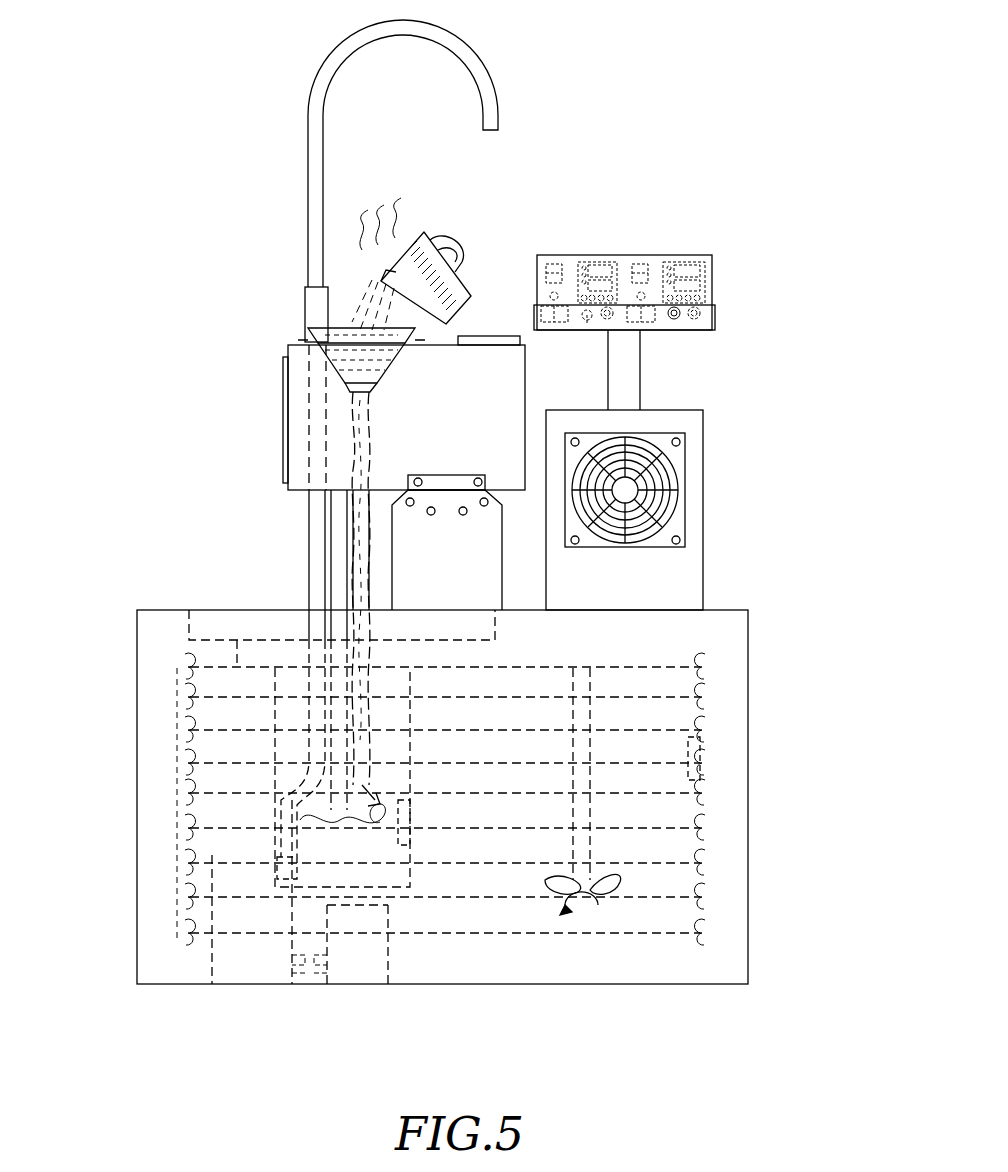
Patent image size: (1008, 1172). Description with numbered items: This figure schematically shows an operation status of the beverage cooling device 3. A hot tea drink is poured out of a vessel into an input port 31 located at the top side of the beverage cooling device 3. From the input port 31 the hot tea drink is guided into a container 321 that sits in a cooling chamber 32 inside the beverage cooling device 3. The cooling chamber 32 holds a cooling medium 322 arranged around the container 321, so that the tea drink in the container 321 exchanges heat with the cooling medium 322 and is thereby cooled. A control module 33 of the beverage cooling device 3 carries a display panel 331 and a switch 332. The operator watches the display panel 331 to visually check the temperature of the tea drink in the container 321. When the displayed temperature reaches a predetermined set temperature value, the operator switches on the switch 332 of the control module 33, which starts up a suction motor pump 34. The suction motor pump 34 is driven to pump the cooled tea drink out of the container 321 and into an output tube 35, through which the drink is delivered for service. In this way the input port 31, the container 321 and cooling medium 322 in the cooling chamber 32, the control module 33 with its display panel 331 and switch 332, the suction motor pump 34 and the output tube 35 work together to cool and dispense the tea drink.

The beverage cooling device 3 is at (760, 975).
The input port 31 is at (348, 332).
The cooling chamber 32 is at (665, 665).
The container 321 is at (368, 885).
The cooling medium 322 is at (230, 850).
The control module 33 is at (792, 283).
The display panel 331 is at (696, 272).
The switch 332 is at (676, 318).
The suction motor pump 34 is at (628, 489).
The output tube 35 is at (318, 256).